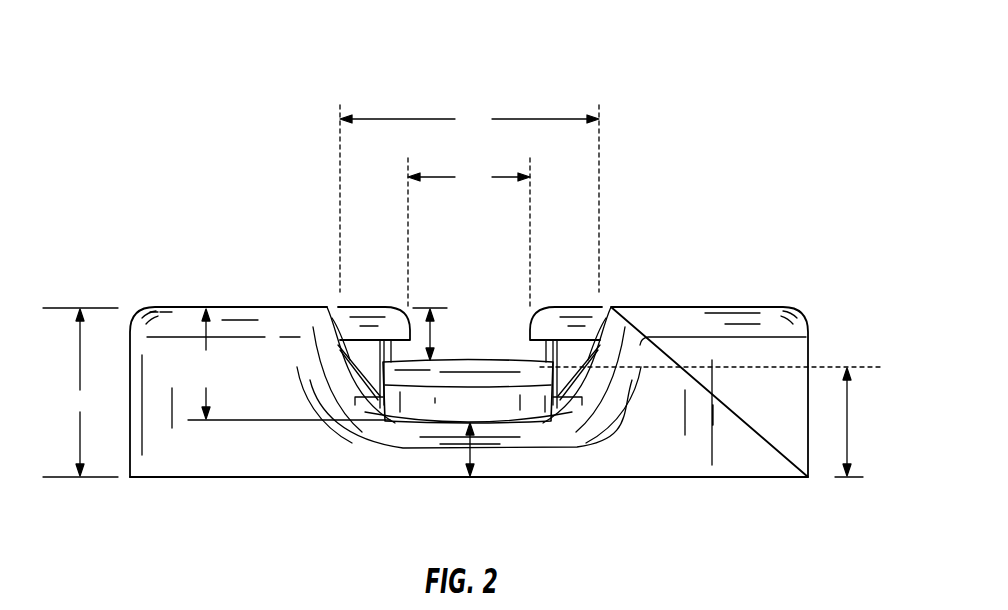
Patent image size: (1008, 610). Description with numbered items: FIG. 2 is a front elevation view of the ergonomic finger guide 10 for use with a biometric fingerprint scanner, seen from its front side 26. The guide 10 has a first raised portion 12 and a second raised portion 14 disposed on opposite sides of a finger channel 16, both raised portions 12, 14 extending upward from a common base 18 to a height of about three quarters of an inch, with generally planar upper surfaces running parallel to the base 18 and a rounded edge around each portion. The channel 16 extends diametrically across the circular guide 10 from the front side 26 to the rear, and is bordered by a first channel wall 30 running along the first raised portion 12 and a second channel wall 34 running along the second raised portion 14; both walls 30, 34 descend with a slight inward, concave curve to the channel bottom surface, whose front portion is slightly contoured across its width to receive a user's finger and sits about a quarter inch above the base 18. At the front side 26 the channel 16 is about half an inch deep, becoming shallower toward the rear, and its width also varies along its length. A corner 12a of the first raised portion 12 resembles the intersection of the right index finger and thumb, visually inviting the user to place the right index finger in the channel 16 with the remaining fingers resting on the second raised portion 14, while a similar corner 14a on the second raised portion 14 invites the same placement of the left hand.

The finger guide 10 is at (148, 120).
The first raised portion 12 is at (208, 307).
The corner of the first raised portion 12a is at (328, 307).
The second raised portion 14 is at (703, 307).
The corner of the second raised portion 14a is at (610, 307).
The finger channel 16 is at (390, 436).
The base 18 is at (697, 477).
The front side 26 is at (622, 464).
The first channel wall 30 is at (376, 370).
The second channel wall 34 is at (580, 370).